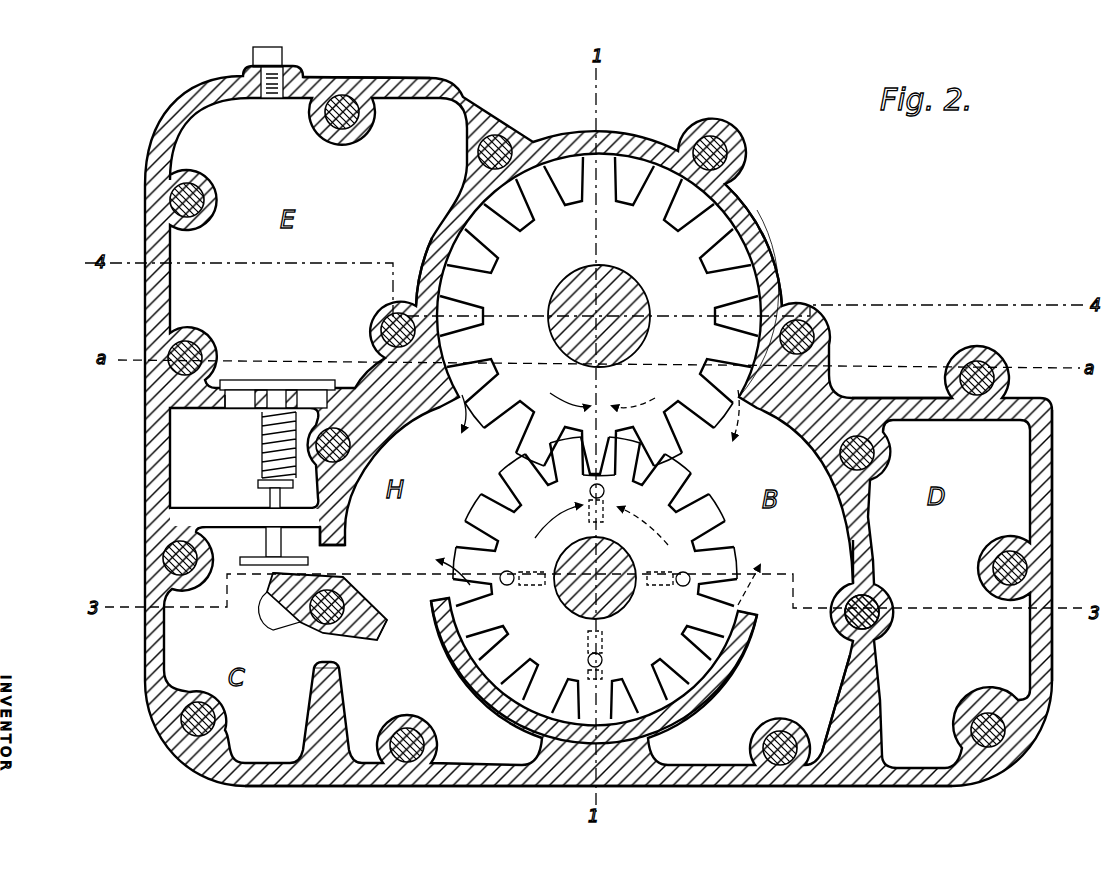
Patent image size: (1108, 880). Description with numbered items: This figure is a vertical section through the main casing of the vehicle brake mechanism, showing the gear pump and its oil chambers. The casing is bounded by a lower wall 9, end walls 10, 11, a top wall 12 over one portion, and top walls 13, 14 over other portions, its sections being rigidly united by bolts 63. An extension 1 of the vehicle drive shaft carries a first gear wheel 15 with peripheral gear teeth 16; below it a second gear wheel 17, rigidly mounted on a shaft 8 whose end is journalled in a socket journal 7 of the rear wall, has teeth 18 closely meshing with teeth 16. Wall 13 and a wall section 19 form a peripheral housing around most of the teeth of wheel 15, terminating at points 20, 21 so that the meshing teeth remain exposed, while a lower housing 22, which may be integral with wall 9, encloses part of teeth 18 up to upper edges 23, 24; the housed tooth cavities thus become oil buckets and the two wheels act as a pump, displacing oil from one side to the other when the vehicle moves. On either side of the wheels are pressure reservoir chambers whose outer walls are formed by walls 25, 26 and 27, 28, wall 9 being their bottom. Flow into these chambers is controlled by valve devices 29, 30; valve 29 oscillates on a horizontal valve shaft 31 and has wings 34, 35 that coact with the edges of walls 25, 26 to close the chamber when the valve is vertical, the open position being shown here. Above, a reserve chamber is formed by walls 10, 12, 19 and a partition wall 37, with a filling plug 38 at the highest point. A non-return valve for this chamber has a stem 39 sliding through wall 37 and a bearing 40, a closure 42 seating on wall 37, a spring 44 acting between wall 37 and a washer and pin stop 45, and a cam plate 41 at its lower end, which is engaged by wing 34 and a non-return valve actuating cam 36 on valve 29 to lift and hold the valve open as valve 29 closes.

The drive shaft extension 1 is at (616, 292).
The socket journal 7 is at (748, 590).
The shaft 8 is at (625, 590).
The lower wall 9 is at (494, 796).
The end wall 10 is at (148, 470).
The end wall 11 is at (1052, 512).
The top wall 12 is at (396, 78).
The top wall 13 is at (630, 133).
The top wall 14 is at (920, 398).
The first gear wheel 15 is at (700, 285).
The gear teeth 16 is at (690, 222).
The second gear wheel 17 is at (676, 510).
The teeth 18 is at (690, 530).
The wall section 19 is at (462, 230).
The housing terminal point 20 is at (455, 385).
The housing terminal point 21 is at (747, 420).
The housing 22 is at (445, 645).
The upper edge 23 is at (430, 600).
The upper edge 24 is at (762, 623).
The outer wall 25 is at (346, 520).
The outer wall 26 is at (338, 670).
The outer wall 27 is at (851, 529).
The outer wall 28 is at (852, 692).
The valve device 29 is at (319, 609).
The valve device 30 is at (892, 620).
The valve shaft 31 is at (330, 590).
The wing 34 is at (272, 585).
The wing 35 is at (380, 630).
The non-return valve actuating cam 36 is at (270, 615).
The partition wall 37 is at (216, 410).
The filling plug 38 is at (283, 57).
The stem 39 is at (268, 498).
The bearing 40 is at (168, 520).
The cam plate 41 is at (266, 565).
The closure 42 is at (308, 380).
The spring 44 is at (260, 452).
The washer and pin stop 45 is at (258, 484).
The bolts 63 is at (170, 197).